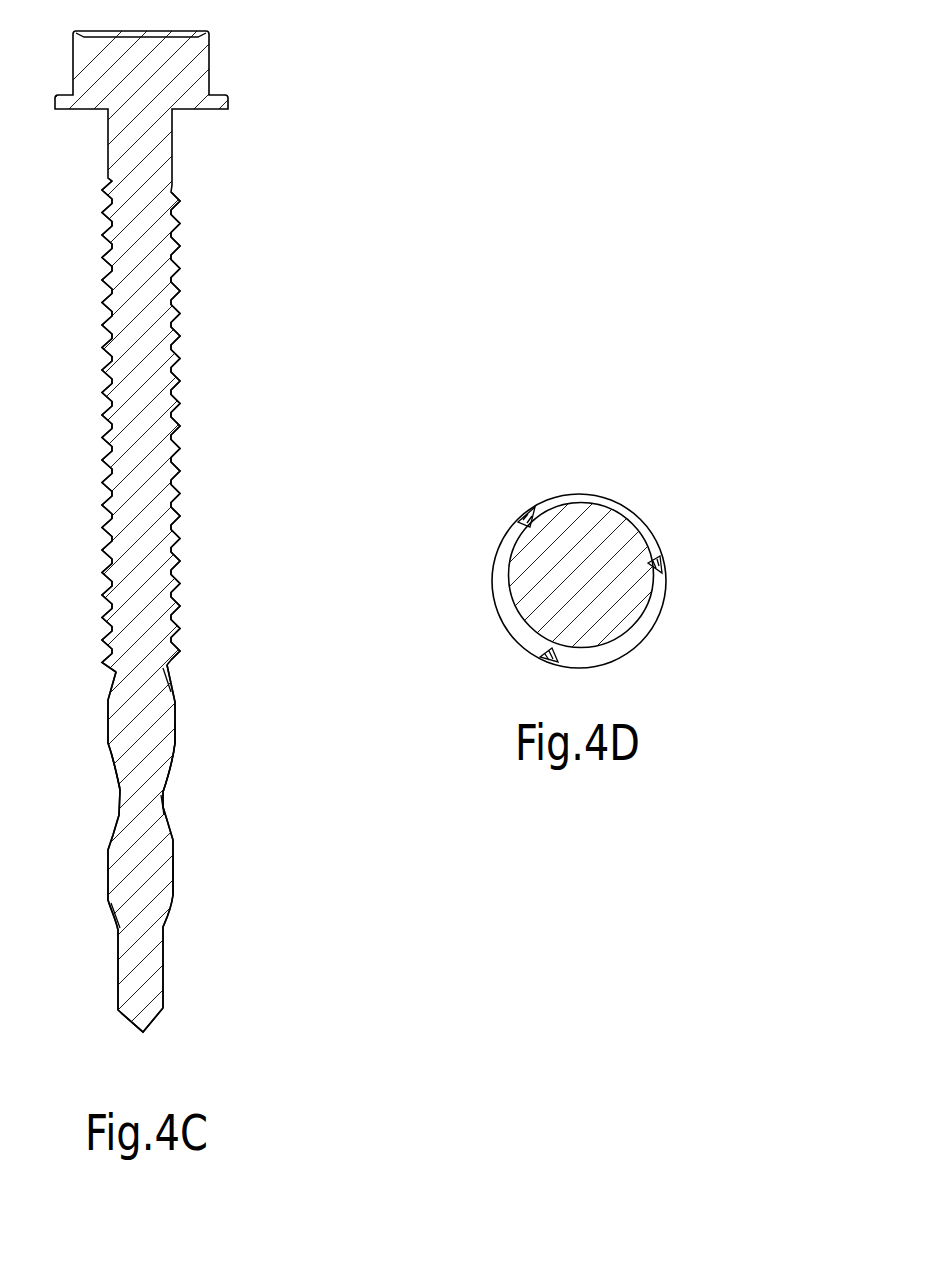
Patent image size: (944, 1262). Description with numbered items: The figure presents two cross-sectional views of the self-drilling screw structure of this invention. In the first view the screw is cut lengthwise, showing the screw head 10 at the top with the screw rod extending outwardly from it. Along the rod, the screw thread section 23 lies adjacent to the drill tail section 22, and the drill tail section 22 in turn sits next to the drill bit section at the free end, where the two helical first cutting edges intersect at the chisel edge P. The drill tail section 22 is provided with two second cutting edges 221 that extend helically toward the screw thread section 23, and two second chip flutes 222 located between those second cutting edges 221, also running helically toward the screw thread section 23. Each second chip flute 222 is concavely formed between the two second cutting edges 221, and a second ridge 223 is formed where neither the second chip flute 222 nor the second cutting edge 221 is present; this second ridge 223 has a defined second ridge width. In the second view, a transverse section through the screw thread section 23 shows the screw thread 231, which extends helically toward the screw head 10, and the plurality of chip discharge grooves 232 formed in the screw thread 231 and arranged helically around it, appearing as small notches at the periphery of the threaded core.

In FIG. 4C, the screw head 10 is at (212, 63).
In FIG. 4C, the screw thread section 23 is at (184, 490).
In FIG. 4D, the screw thread section 23 is at (603, 402).
In FIG. 4C, the drill tail section 22 is at (282, 660).
In FIG. 4C, the second cutting edge 221 is at (175, 749).
In FIG. 4C, the second chip flute 222 is at (172, 673).
In FIG. 4C, the second ridge 223 is at (176, 722).
In FIG. 4C, the chisel edge P is at (143, 1032).
In FIG. 4D, the screw thread 231 is at (555, 503).
In FIG. 4D, the chip discharge groove 232 is at (531, 512).